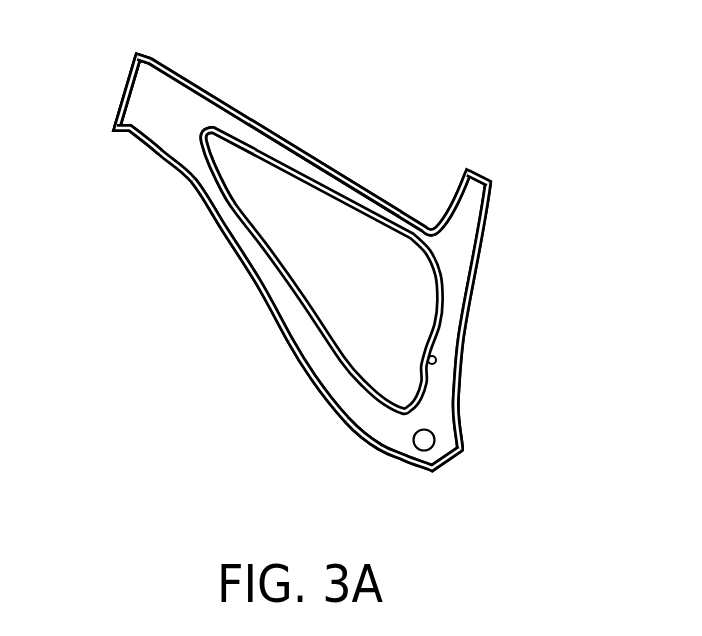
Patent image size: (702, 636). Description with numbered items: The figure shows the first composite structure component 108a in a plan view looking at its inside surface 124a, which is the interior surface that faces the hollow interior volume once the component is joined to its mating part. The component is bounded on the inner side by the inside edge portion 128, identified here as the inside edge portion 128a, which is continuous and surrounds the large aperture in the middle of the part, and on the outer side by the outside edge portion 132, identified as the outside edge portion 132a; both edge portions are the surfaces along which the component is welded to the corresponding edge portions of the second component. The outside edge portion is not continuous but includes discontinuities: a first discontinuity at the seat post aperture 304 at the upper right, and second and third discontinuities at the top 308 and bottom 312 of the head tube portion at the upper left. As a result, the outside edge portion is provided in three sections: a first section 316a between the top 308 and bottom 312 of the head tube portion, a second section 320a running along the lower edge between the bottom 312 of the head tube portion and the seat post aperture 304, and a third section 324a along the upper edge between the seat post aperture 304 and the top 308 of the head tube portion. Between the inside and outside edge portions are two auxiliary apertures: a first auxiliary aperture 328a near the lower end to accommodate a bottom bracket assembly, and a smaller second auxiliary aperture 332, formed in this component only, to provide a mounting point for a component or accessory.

The first composite structure component 108a is at (224, 205).
The inside surface 124a is at (263, 276).
The inside edge portion 128 is at (294, 279).
The inside edge portion 128a is at (203, 128).
The outside edge portion 132 is at (396, 455).
The outside edge portion 132a is at (137, 57).
The seat post aperture 304 is at (483, 180).
The top of head tube portion 308 is at (147, 56).
The bottom of head tube portion 312 is at (127, 132).
The first section 316a is at (125, 103).
The second section 320a is at (313, 378).
The third section 324a is at (320, 164).
The first auxiliary aperture 328a is at (437, 440).
The second auxiliary aperture 332 is at (440, 360).